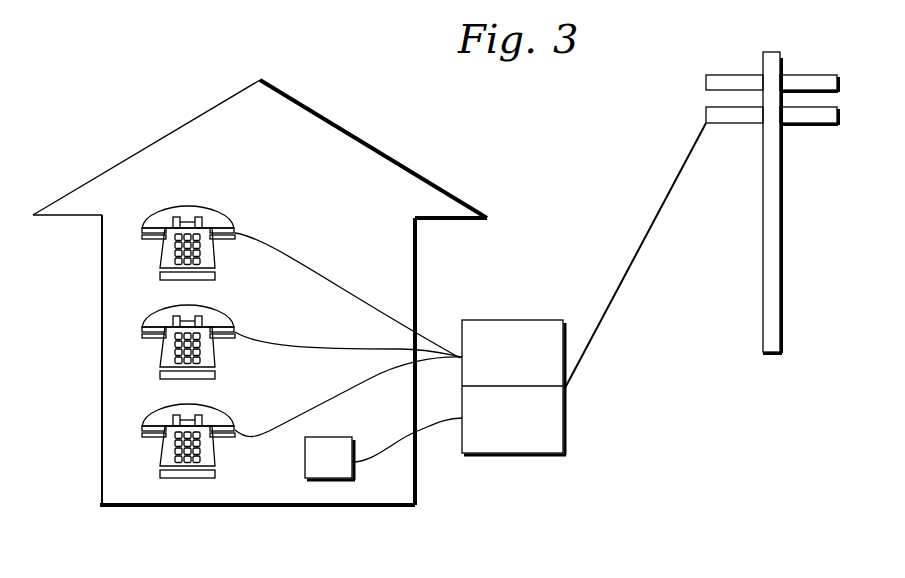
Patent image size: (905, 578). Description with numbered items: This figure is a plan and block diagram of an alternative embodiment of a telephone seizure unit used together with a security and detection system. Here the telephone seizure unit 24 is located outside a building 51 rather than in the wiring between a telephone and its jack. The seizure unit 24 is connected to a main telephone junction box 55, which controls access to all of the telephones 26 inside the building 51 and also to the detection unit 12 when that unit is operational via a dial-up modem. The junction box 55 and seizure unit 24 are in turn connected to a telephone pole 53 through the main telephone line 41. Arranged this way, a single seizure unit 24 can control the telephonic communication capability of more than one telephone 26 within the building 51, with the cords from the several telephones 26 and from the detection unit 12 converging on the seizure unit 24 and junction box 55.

The building 51 is at (262, 80).
The telephone 26 is at (155, 222).
The telephone seizure unit 24 is at (514, 320).
The main telephone junction box 55 is at (566, 431).
The main telephone line 41 is at (660, 212).
The telephone pole 53 is at (770, 52).
The detection unit 12 is at (331, 480).